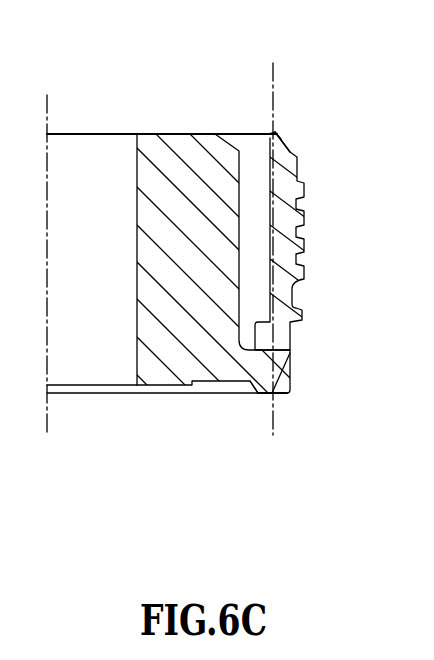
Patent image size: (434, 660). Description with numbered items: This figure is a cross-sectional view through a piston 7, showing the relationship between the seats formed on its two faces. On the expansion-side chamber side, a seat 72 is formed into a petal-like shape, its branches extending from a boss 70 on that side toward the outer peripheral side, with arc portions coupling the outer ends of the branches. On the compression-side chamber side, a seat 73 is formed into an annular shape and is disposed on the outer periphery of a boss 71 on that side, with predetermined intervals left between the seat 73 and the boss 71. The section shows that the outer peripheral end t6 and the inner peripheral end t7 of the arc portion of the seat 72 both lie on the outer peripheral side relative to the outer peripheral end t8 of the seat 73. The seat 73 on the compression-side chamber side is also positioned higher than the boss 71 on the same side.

The piston 7 is at (310, 227).
The boss 70 is at (172, 134).
The boss 71 is at (155, 394).
The seat 72 is at (276, 133).
The seat 73 is at (261, 395).
The outer peripheral end t6 is at (277, 133).
The inner peripheral end t7 is at (275, 133).
The outer peripheral end t8 is at (266, 395).